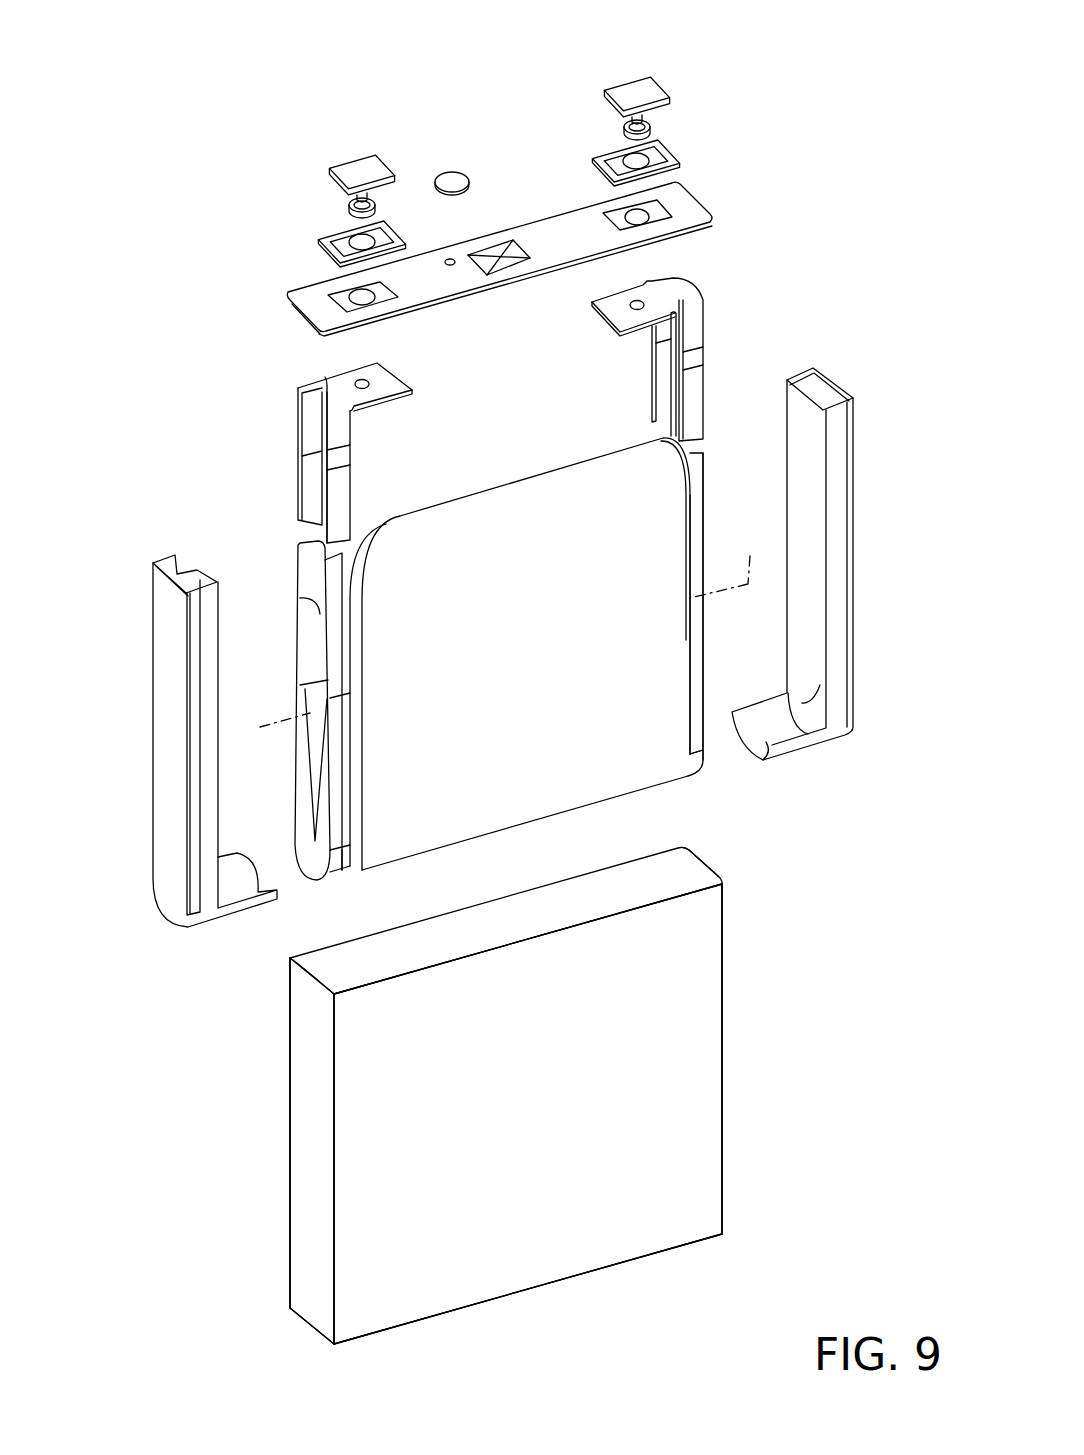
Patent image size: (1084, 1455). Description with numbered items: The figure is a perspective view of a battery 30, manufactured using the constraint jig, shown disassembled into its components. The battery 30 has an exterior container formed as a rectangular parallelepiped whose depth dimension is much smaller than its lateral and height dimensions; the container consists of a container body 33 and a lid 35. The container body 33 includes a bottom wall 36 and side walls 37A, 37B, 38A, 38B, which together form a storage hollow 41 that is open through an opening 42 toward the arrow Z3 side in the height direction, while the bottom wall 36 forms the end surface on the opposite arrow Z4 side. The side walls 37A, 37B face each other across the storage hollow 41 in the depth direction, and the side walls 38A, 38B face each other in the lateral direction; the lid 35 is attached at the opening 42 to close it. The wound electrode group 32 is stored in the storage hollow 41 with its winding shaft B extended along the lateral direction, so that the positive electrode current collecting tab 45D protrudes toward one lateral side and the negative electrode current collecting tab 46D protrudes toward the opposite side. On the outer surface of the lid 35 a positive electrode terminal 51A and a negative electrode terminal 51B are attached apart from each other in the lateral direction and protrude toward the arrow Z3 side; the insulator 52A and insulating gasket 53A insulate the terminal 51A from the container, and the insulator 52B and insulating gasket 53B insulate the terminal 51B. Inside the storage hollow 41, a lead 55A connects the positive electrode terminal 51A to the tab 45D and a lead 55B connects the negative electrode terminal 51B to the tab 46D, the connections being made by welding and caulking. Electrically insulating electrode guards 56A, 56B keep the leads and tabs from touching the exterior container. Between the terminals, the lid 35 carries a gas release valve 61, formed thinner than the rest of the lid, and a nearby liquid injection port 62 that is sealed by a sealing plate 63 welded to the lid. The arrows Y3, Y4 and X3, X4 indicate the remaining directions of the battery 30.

The battery 30 is at (823, 169).
The electrode group 32 is at (549, 488).
The container body 33 is at (702, 966).
The lid 35 is at (707, 192).
The bottom wall 36 is at (689, 1251).
The side wall 37A is at (423, 1286).
The side wall 37B is at (284, 1121).
The side wall 38A is at (733, 1170).
The side wall 38B is at (311, 1219).
The storage hollow 41 is at (560, 905).
The opening 42 is at (700, 877).
The positive electrode current collecting tab 45D is at (692, 693).
The negative electrode current collecting tab 46D is at (345, 893).
The positive electrode terminal 51A is at (633, 62).
The negative electrode terminal 51B is at (356, 146).
The insulator 52A is at (681, 158).
The insulator 52B is at (319, 246).
The insulating gasket 53A is at (655, 127).
The insulating gasket 53B is at (346, 206).
The lead 55A is at (694, 326).
The lead 55B is at (334, 436).
The electrode guard 56A is at (842, 613).
The electrode guard 56B is at (151, 776).
The gas release valve 61 is at (520, 251).
The liquid injection port 62 is at (451, 259).
The sealing plate 63 is at (462, 175).
The winding shaft B is at (505, 624).
The arrow Z3 side Z3 is at (750, 1020).
The arrow Z4 side Z4 is at (750, 1060).
The Y3 direction Y3 is at (616, 1283).
The Y4 direction Y4 is at (525, 1318).
The X3 direction X3 is at (268, 1335).
The X4 direction X4 is at (266, 1298).